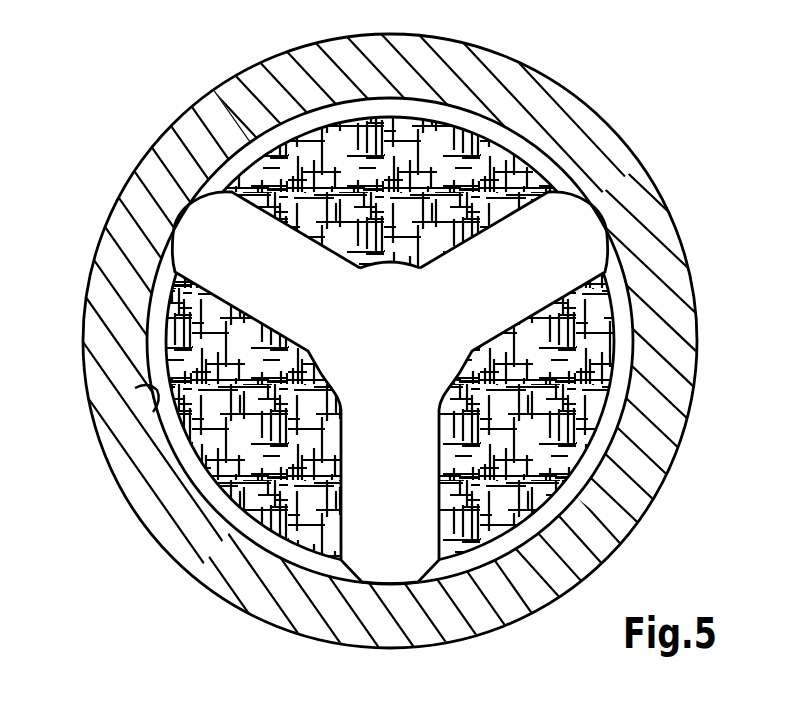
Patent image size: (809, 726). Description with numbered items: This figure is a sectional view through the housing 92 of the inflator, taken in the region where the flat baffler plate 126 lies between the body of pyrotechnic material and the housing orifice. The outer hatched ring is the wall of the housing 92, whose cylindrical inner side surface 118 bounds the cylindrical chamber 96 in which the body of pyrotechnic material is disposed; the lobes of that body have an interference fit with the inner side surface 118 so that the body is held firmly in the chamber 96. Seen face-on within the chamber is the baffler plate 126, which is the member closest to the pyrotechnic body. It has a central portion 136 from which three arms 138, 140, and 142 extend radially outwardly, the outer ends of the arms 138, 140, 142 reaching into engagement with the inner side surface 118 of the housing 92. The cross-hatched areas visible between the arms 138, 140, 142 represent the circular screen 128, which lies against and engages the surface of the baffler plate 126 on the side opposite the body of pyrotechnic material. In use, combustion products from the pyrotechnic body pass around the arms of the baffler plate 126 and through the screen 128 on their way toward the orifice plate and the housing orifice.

The housing 92 is at (162, 497).
The cylindrical chamber 96 is at (532, 152).
The cylindrical inner side surface 118 is at (135, 388).
The baffler plate 126 is at (584, 190).
The circular screen 128 is at (572, 410).
The central portion of the baffler plate 136 is at (409, 352).
The arm 138 is at (223, 255).
The arm 140 is at (387, 547).
The arm 142 is at (572, 243).